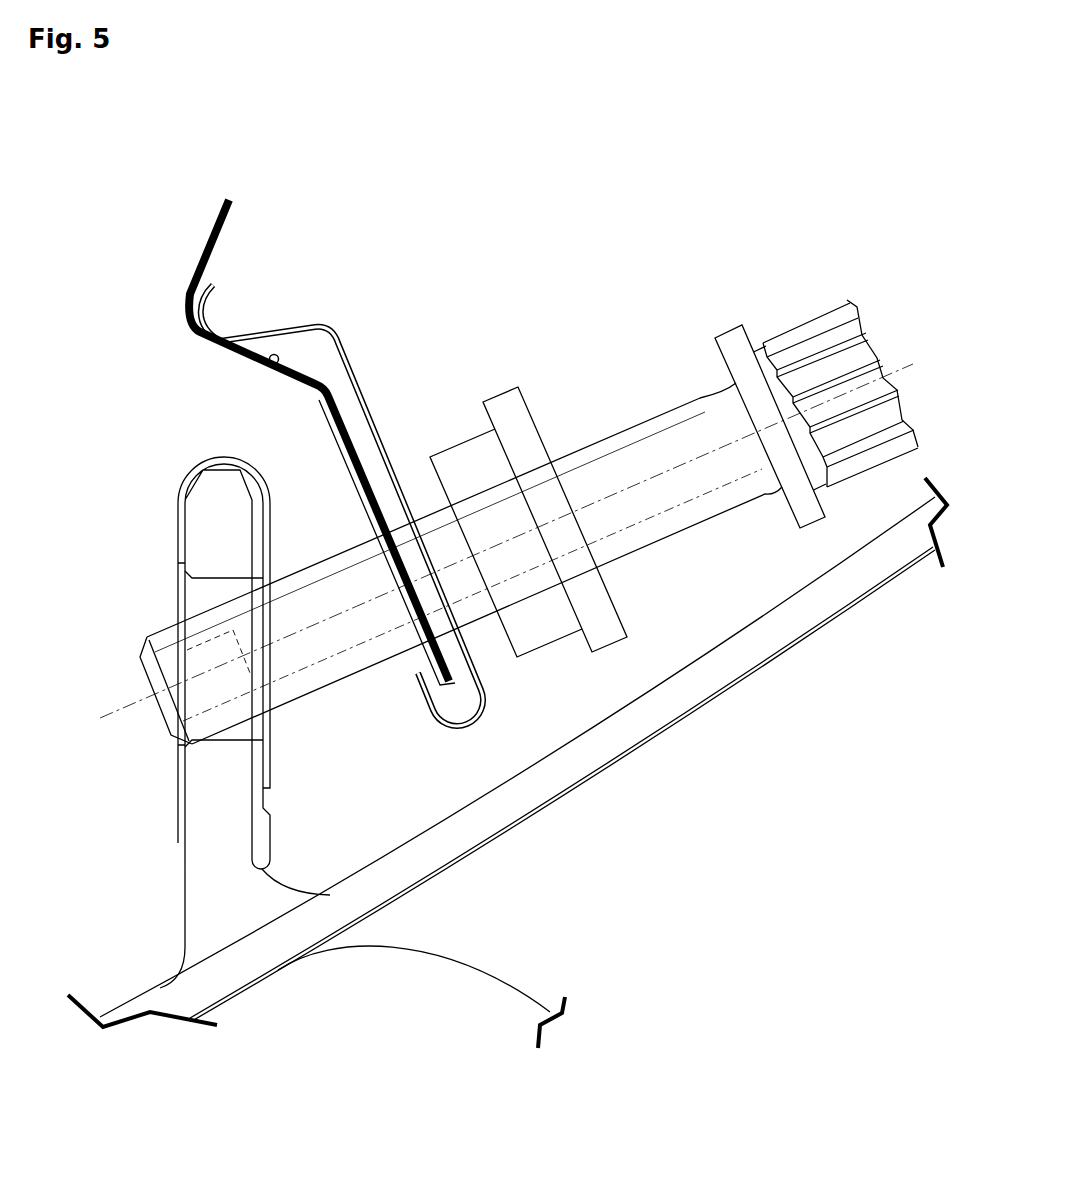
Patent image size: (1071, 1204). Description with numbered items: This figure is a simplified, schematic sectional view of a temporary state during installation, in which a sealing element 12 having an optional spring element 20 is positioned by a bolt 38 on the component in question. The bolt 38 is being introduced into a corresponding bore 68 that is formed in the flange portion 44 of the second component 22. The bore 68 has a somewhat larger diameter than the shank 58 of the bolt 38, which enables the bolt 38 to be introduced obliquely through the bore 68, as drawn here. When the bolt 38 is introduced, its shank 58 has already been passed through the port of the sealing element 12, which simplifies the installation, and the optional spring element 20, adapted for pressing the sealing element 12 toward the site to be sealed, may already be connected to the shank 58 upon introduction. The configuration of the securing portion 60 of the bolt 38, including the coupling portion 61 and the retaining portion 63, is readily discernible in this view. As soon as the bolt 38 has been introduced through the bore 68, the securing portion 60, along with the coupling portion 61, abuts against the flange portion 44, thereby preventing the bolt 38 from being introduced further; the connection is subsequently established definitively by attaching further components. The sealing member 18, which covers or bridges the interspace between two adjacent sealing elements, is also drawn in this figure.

The sealing element 12 is at (325, 430).
The sealing member 18 is at (276, 362).
The spring element 20 is at (343, 353).
The second component 22 is at (617, 746).
The bolt 38 is at (594, 470).
The flange portion 44 is at (208, 528).
The shank 58 is at (655, 538).
The securing portion 60 is at (515, 472).
The coupling portion 61 is at (468, 460).
The retaining portion 63 is at (502, 403).
The bore 68 is at (197, 593).